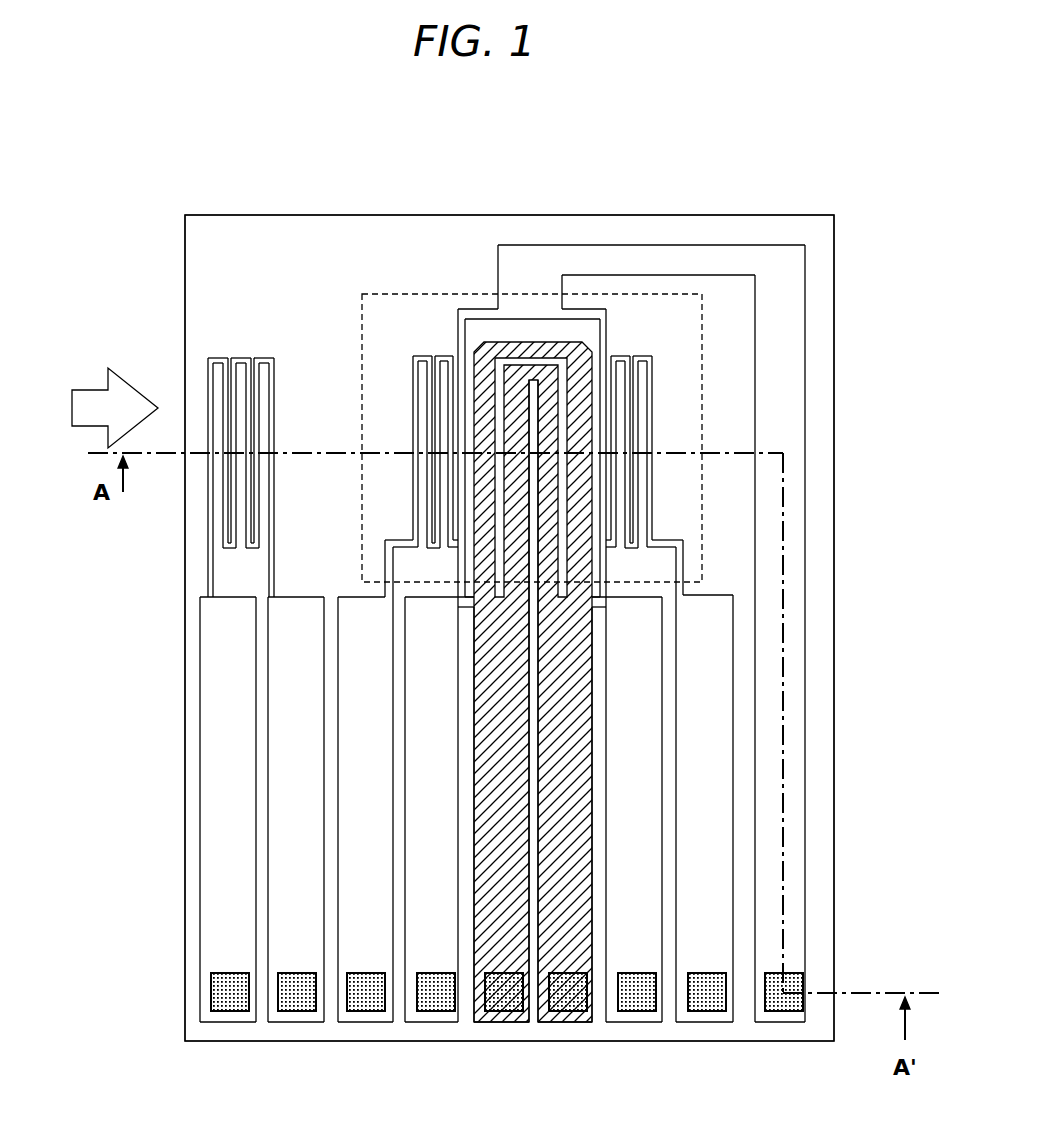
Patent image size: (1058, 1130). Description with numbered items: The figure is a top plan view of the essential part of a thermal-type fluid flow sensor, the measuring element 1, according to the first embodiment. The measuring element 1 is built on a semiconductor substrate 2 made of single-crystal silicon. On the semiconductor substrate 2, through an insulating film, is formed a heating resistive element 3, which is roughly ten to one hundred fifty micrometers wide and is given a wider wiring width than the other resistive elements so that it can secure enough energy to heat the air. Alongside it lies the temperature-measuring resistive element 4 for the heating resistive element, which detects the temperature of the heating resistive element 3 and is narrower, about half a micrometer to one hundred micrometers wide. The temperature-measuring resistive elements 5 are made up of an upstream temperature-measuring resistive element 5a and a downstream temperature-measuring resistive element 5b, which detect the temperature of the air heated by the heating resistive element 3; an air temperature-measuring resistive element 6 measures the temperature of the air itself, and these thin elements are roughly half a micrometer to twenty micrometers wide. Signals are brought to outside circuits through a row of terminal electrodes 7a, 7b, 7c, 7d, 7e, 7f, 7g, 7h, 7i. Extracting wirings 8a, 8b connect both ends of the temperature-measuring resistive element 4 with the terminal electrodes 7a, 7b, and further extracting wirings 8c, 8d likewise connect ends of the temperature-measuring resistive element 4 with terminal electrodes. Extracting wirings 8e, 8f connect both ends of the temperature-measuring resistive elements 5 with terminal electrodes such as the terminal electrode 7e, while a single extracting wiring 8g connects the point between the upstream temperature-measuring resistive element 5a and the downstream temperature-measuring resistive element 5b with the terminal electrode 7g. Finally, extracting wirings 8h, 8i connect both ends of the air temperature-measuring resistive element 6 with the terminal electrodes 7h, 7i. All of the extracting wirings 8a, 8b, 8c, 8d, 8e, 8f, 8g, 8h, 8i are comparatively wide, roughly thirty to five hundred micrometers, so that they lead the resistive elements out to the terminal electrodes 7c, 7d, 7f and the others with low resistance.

The measuring element 1 is at (618, 196).
The semiconductor substrate 2 is at (192, 690).
The heating resistive element 3 is at (482, 570).
The temperature-measuring resistive element for the heating resistive element 4 is at (500, 522).
The temperature-measuring resistive elements 5 is at (565, 131).
The upstream temperature-measuring resistive element 5a is at (424, 350).
The downstream temperature-measuring resistive element 5b is at (636, 347).
The air temperature-measuring resistive element 6 is at (251, 354).
The terminal electrode 7a is at (505, 1000).
The terminal electrode 7b is at (569, 1000).
The terminal electrode 7c is at (437, 1000).
The terminal electrode 7d is at (638, 1000).
The terminal electrode 7e is at (367, 1000).
The terminal electrode 7f is at (708, 1000).
The terminal electrode 7g is at (785, 1000).
The terminal electrode 7h is at (231, 1000).
The terminal electrode 7i is at (298, 1000).
The extracting wiring 8a is at (515, 942).
The extracting wiring 8b is at (582, 880).
The extracting wiring 8c is at (427, 937).
The extracting wiring 8d is at (647, 818).
The extracting wiring 8e is at (352, 878).
The extracting wiring 8f is at (712, 750).
The extracting wiring 8g is at (800, 627).
The extracting wiring 8h is at (217, 748).
The extracting wiring 8i is at (287, 812).